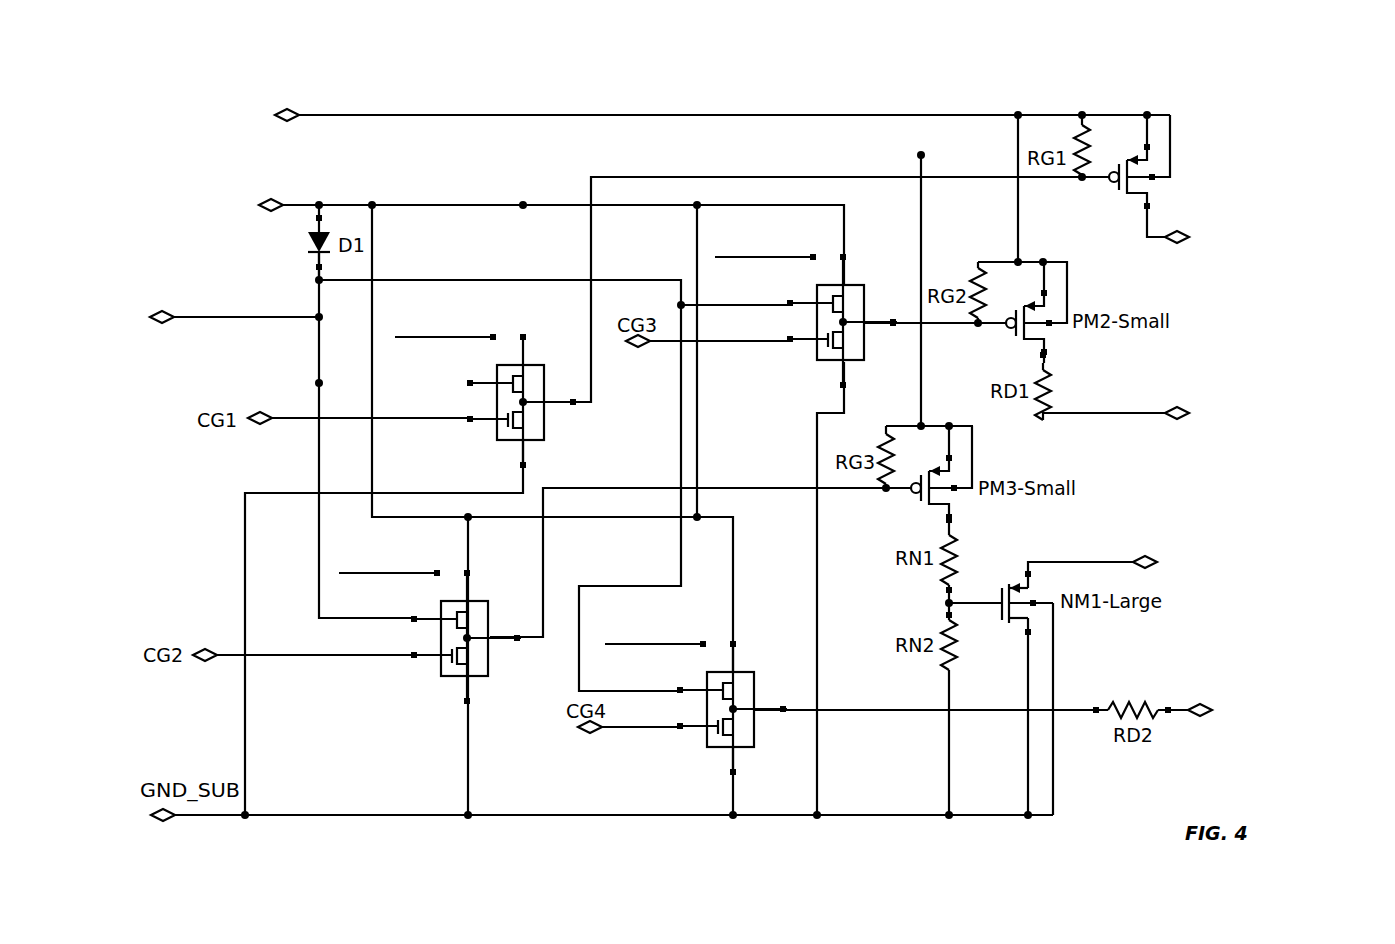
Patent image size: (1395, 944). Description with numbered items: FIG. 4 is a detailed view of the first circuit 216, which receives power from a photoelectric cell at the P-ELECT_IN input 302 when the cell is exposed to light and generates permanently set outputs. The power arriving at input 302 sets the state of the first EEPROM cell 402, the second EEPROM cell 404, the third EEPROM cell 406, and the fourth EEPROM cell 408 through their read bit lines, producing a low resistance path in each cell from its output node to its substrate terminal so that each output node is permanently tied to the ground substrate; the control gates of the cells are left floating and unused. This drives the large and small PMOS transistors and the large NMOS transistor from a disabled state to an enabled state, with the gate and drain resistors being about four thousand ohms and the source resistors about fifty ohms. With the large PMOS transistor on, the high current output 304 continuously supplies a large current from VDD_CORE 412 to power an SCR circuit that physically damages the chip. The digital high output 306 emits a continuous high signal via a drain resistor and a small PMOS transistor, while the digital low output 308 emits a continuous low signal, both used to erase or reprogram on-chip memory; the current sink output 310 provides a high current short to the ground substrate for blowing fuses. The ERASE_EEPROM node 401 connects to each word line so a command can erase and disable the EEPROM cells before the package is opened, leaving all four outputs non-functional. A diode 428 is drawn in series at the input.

The first circuit 216 is at (1240, 149).
The input 302 is at (209, 188).
The high current output 304 is at (1272, 256).
The digital high output 306 is at (1242, 396).
The digital low output 308 is at (1276, 684).
The current sink output 310 is at (1256, 545).
The ERASE_EEPROM node 401 is at (226, 283).
The EEPROM 1 402 is at (527, 389).
The EEPROM 2 404 is at (436, 640).
The EEPROM 3 406 is at (811, 327).
The EEPROM 4 408 is at (694, 713).
The VDD_CORE 412 is at (227, 99).
The diode D1 428 is at (294, 242).